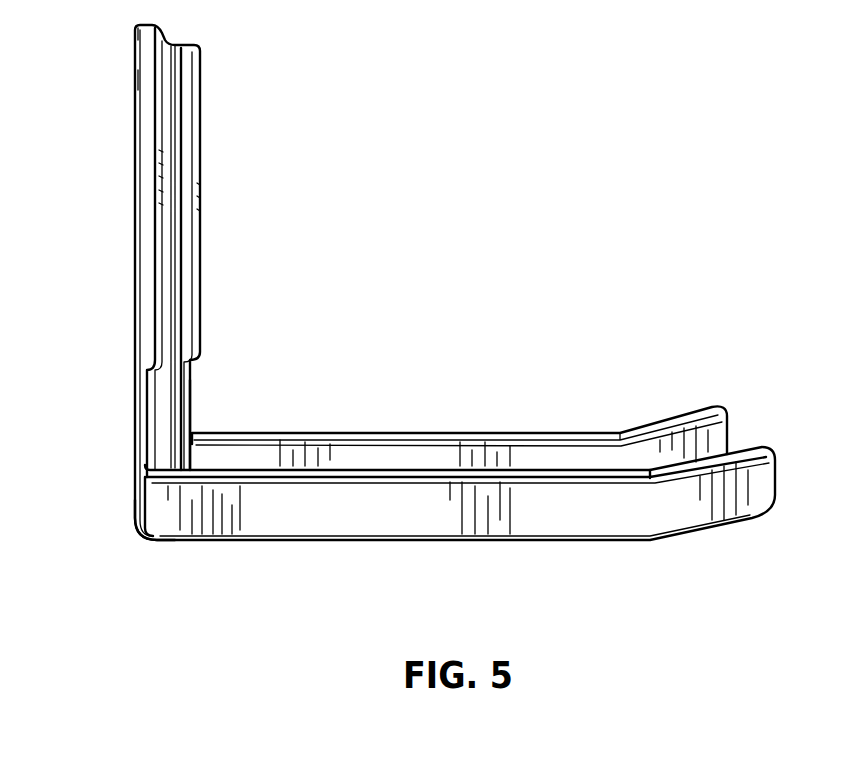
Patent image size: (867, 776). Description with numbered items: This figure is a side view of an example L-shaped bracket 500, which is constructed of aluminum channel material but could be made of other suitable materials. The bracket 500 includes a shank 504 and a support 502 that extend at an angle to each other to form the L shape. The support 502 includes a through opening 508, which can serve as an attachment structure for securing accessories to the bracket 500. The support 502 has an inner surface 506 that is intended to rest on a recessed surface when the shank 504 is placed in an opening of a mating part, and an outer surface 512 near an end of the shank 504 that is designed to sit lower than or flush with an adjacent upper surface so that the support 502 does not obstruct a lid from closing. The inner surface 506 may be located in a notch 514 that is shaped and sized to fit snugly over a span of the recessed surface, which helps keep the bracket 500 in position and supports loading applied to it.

The L bracket 500 is at (286, 510).
The support 502 is at (147, 235).
The shank 504 is at (578, 540).
The inner surface 506 is at (162, 442).
The through opening 508 is at (175, 270).
The outer surface 512 is at (147, 473).
The notch 514 is at (205, 380).